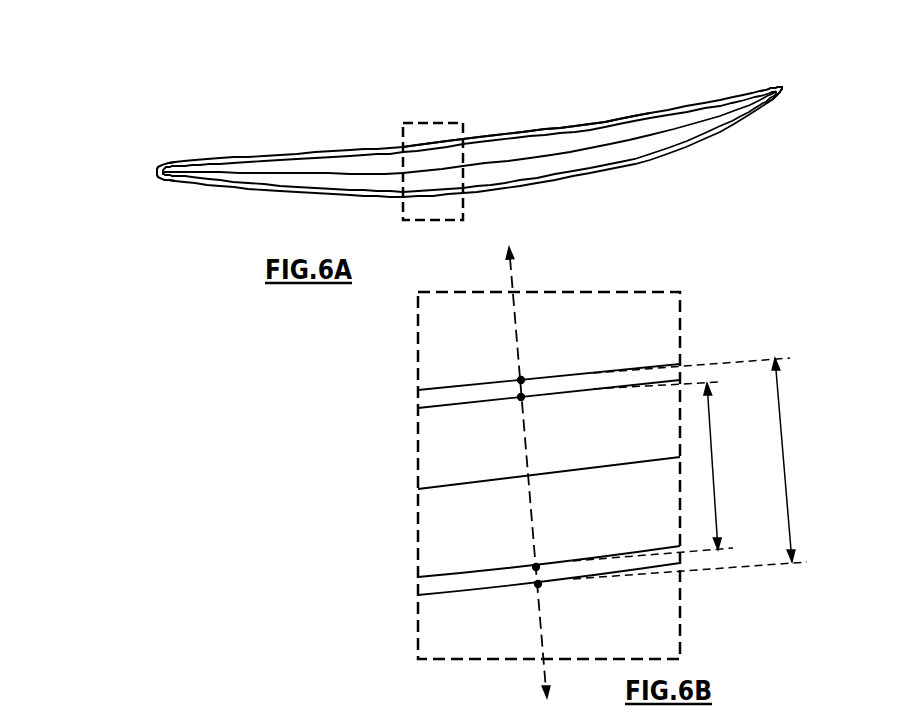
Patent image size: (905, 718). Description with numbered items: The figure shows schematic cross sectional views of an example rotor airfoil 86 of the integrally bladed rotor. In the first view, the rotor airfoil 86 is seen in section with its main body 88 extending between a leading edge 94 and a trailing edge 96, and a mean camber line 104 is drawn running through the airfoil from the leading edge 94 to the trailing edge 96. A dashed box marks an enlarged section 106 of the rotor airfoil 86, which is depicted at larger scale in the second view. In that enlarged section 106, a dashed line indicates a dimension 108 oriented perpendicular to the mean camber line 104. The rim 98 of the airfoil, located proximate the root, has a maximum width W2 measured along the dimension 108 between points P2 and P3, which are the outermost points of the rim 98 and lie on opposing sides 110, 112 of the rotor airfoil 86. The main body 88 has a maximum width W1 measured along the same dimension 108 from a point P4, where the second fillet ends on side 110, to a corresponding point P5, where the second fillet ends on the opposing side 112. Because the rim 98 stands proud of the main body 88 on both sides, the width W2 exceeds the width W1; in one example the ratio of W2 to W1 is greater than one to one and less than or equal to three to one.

In FIG. 6A, the rotor airfoil 86 is at (447, 129).
In FIG. 6A, the main body 88 is at (638, 129).
In FIG. 6A, the leading edge 94 is at (135, 157).
In FIG. 6A, the trailing edge 96 is at (787, 78).
In FIG. 6A, the rim 98 is at (587, 124).
In FIG. 6B, the rim 98 is at (592, 371).
In FIG. 6A, the mean camber line 104 is at (298, 175).
In FIG. 6B, the mean camber line 104 is at (440, 487).
In FIG. 6A, the enlarged section 106 is at (412, 123).
In FIG. 6B, the enlarged section 106 is at (648, 292).
In FIG. 6B, the dimension 108 is at (513, 278).
In FIG. 6B, the side 110 is at (591, 608).
In FIG. 6B, the opposing side 112 is at (604, 351).
In FIG. 6B, the point P2 is at (537, 587).
In FIG. 6B, the point P3 is at (518, 378).
In FIG. 6B, the point P4 is at (533, 565).
In FIG. 6B, the point P5 is at (520, 399).
In FIG. 6B, the maximum width of the main body W1 is at (715, 477).
In FIG. 6B, the maximum width of the rim W2 is at (785, 477).